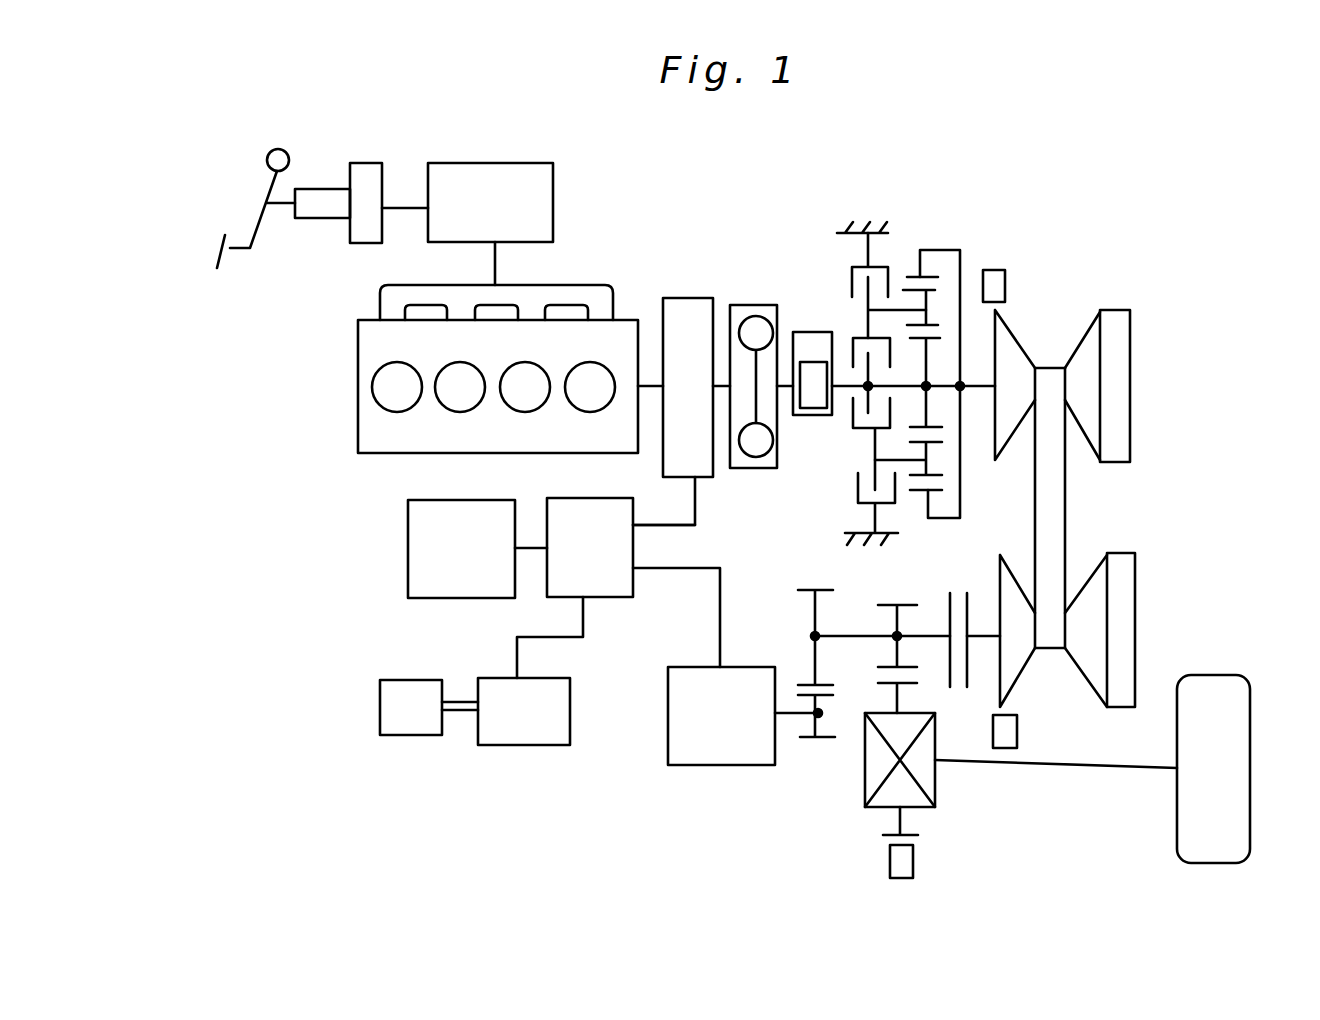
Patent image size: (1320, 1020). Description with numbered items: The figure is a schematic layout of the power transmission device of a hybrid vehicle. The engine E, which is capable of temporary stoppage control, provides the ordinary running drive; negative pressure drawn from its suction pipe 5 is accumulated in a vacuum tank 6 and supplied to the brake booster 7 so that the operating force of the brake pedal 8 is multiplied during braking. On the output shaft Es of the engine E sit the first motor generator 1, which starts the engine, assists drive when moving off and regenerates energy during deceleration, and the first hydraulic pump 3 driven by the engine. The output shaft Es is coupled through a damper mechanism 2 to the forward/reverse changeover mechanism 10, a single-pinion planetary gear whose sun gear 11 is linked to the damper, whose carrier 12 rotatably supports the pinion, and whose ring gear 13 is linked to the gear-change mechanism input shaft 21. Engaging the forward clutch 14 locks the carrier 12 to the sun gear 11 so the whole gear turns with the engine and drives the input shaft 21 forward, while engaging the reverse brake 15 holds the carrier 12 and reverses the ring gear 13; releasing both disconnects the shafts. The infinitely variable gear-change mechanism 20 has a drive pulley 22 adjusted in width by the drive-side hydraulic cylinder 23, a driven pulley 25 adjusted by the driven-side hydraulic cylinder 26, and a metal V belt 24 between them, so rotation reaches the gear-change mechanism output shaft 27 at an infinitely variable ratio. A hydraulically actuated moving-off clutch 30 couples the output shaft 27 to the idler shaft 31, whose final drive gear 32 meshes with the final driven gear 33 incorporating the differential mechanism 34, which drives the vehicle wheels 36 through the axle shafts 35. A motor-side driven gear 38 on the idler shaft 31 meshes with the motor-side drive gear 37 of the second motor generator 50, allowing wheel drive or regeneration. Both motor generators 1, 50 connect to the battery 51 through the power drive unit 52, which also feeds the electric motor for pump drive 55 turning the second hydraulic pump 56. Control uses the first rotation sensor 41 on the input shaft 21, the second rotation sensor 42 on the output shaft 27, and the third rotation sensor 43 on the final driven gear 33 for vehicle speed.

The first motor generator 1 is at (680, 297).
The damper mechanism 2 is at (752, 303).
The first hydraulic pump 3 is at (808, 330).
The suction pipe 5 is at (565, 283).
The vacuum tank 6 is at (503, 160).
The throttle actuator / sensor 7 is at (365, 162).
The brake pedal 8 is at (220, 257).
The engine E is at (372, 437).
The output shaft Es is at (650, 393).
The forward/reverse changeover mechanism 10 is at (913, 357).
The sun gear 11 is at (927, 352).
The carrier 12 is at (895, 308).
The ring gear 13 is at (935, 275).
The forward clutch 14 is at (852, 418).
The reverse brake 15 is at (858, 490).
The infinitely variable gear-change mechanism 20 is at (1101, 475).
The gear-change mechanism input shaft 21 is at (978, 393).
The drive pulley 22 is at (1010, 330).
The drive-side hydraulic cylinder 23 is at (1123, 372).
The metal V belt 24 is at (1060, 503).
The driven pulley 25 is at (1030, 667).
The driven-side hydraulic cylinder 26 is at (1132, 598).
The gear-change mechanism output shaft 27 is at (992, 637).
The moving-off clutch 30 is at (950, 597).
The idler shaft 31 is at (853, 633).
The final drive gear 32 is at (898, 602).
The final driven gear 33 is at (913, 835).
The differential mechanism 34 is at (863, 777).
The axle shafts 35 is at (1095, 768).
The vehicle wheels 36 is at (1207, 673).
The motor-side drive gear 37 is at (815, 743).
The motor-side driven gear 38 is at (812, 587).
The first rotation sensor 41 is at (1005, 280).
The second rotation sensor 42 is at (1017, 730).
The third rotation sensor 43 is at (913, 863).
The second motor generator 50 is at (701, 728).
The battery 51 is at (442, 568).
The power drive unit 52 is at (574, 564).
The electric motor for pump drive 55 is at (504, 726).
The second hydraulic pump 56 is at (394, 728).